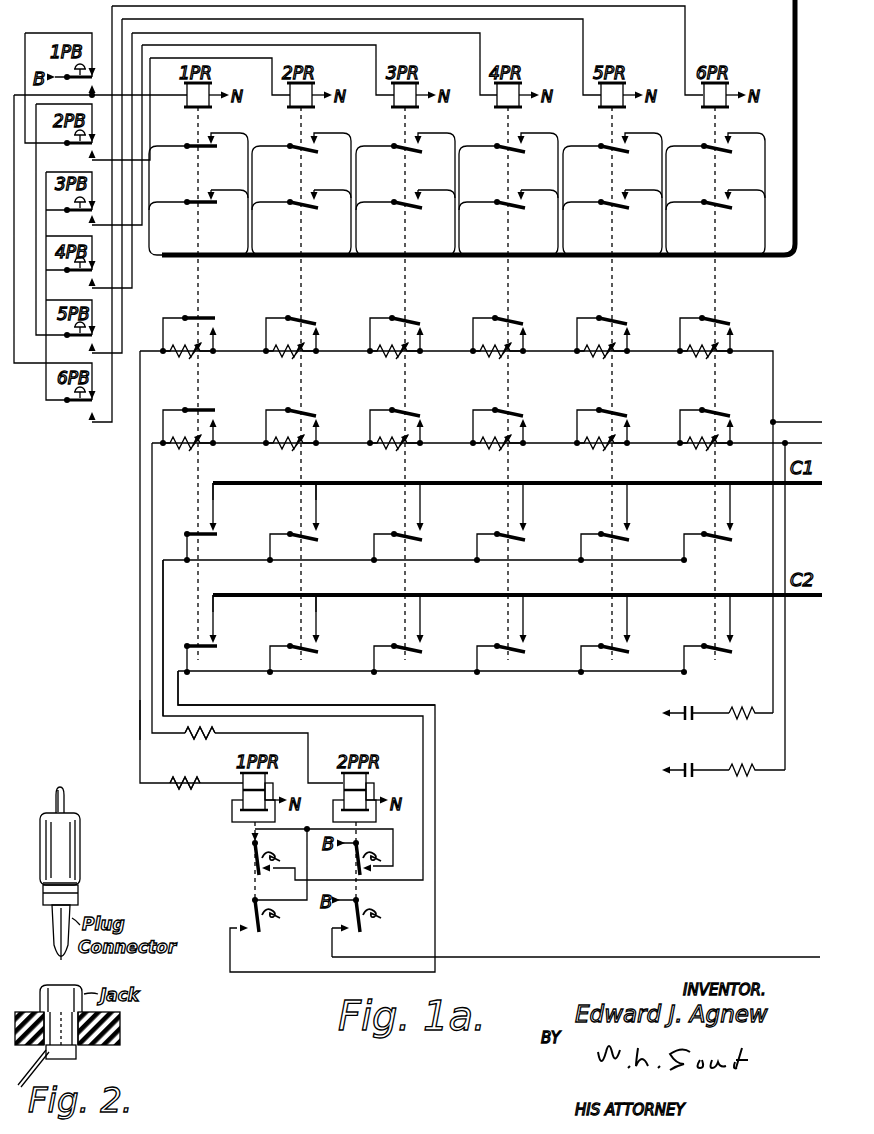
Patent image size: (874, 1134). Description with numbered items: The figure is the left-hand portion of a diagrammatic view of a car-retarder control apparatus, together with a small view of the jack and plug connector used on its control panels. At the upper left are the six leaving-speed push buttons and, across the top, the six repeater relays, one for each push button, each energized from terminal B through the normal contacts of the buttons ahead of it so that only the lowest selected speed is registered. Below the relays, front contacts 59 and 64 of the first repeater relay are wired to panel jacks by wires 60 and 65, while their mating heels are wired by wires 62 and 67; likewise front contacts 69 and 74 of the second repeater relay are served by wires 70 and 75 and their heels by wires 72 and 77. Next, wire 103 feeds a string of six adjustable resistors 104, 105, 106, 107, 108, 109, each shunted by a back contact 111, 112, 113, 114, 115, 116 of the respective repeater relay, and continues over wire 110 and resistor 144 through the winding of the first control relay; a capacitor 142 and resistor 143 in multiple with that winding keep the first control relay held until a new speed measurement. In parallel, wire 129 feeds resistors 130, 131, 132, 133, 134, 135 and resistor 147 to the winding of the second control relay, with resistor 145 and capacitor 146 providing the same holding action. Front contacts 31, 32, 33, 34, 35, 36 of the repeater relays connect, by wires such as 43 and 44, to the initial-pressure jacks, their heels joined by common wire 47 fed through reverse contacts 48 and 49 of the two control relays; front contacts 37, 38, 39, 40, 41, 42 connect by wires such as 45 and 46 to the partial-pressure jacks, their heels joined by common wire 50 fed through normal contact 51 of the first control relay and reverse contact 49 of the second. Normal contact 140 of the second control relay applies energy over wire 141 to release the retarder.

The front contact 31 is at (196, 532).
The front contact 32 is at (293, 523).
The front contact 33 is at (397, 523).
The front contact 34 is at (500, 523).
The front contact 35 is at (604, 523).
The front contact 36 is at (707, 523).
The front contact 37 is at (196, 644).
The front contact 38 is at (293, 635).
The front contact 39 is at (397, 635).
The front contact 40 is at (500, 635).
The front contact 41 is at (604, 635).
The front contact 42 is at (707, 635).
The wire 43 is at (214, 500).
The wire 44 is at (317, 500).
The wire 45 is at (214, 613).
The wire 46 is at (317, 613).
The common wire 47 is at (163, 572).
The reverse contact 48 is at (254, 854).
The reverse contact 49 is at (355, 854).
The common wire 50 is at (178, 698).
The normal contact 51 is at (250, 912).
The front contact 59 is at (194, 135).
The wire 60 is at (238, 134).
The wire 62 is at (152, 152).
The front contact 64 is at (196, 192).
The wire 65 is at (224, 189).
The wire 67 is at (154, 208).
The front contact 69 is at (298, 137).
The wire 70 is at (316, 133).
The wire 72 is at (252, 152).
The front contact 74 is at (299, 193).
The wire 75 is at (316, 189).
The wire 77 is at (254, 208).
The wire 103 is at (796, 415).
The resistor 104 is at (182, 357).
The resistor 105 is at (291, 362).
The resistor 106 is at (395, 362).
The resistor 107 is at (498, 362).
The resistor 108 is at (602, 362).
The resistor 109 is at (705, 362).
The wire 110 is at (140, 724).
The back contact 111 is at (196, 315).
The back contact 112 is at (293, 323).
The back contact 113 is at (397, 323).
The back contact 114 is at (500, 323).
The back contact 115 is at (604, 323).
The back contact 116 is at (707, 323).
The wire 129 is at (802, 436).
The resistor 130 is at (188, 454).
The resistor 131 is at (291, 454).
The resistor 132 is at (395, 454).
The resistor 133 is at (498, 454).
The resistor 134 is at (602, 454).
The resistor 135 is at (705, 454).
The normal contact 140 is at (343, 935).
The wire 141 is at (576, 947).
The capacitor 142 is at (686, 708).
The resistor 143 is at (752, 707).
The resistor 144 is at (176, 790).
The resistor 145 is at (752, 764).
The capacitor 146 is at (686, 765).
The resistor 147 is at (208, 742).